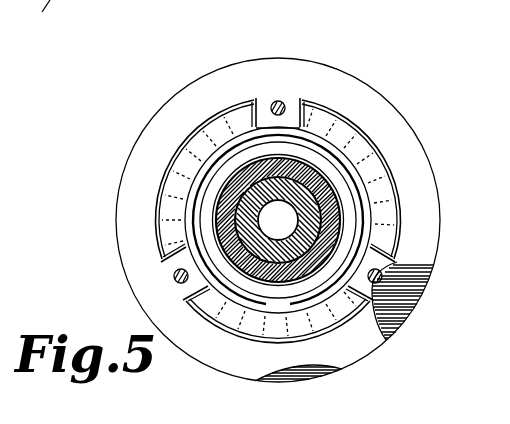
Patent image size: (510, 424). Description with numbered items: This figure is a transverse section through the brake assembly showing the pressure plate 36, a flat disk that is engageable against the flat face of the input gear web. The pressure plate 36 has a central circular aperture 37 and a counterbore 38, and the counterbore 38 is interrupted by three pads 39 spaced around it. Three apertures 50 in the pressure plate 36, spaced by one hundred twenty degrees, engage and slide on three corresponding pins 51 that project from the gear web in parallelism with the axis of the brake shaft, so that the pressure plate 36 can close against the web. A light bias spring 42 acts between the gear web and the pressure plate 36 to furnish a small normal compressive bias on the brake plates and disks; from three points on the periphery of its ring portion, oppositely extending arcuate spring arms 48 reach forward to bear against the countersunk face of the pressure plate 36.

The pressure plate 36 is at (367, 84).
The central circular aperture 37 is at (357, 212).
The counterbore 38 is at (377, 167).
The pads 39 is at (260, 110).
The bias spring 42 is at (397, 223).
The spring arms 48 is at (199, 314).
The apertures 50 is at (279, 102).
The pins 51 is at (287, 105).